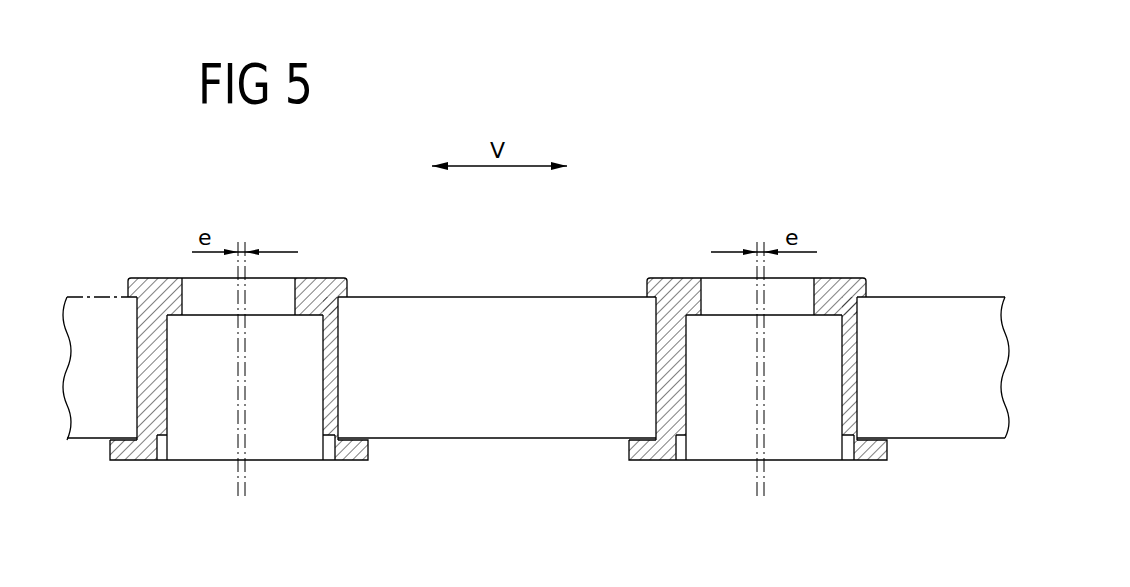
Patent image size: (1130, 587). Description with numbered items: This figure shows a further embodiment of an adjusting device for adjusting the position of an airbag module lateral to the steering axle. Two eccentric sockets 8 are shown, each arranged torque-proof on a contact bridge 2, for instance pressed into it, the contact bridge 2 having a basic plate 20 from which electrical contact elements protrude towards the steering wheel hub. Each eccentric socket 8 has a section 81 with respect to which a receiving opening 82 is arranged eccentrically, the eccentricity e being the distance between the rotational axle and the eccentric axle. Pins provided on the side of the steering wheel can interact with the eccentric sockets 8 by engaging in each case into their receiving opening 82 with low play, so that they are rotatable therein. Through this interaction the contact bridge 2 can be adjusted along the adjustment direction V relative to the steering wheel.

The contact bridge 2 is at (1008, 377).
The basic plate 20 is at (565, 313).
The eccentric socket 8 is at (340, 346).
The section of the eccentric socket 81 is at (297, 293).
The receiving opening 82 is at (325, 422).